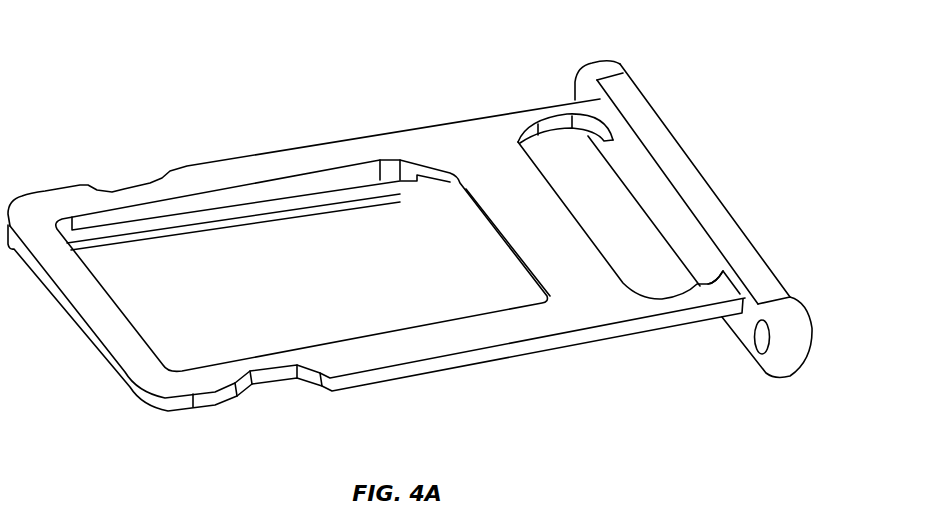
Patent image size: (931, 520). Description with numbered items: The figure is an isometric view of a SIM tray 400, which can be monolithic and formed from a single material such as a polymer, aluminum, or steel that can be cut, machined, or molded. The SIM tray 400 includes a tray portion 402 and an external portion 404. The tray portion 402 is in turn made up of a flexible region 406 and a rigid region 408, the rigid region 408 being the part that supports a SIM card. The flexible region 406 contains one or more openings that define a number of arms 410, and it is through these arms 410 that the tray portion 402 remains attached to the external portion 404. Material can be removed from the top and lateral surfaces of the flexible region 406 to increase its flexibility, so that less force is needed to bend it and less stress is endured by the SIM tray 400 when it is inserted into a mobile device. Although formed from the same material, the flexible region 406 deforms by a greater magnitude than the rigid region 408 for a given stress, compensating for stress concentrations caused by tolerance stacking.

The SIM tray 400 is at (150, 68).
The tray portion 402 is at (377, 377).
The external portion 404 is at (697, 167).
The flexible region 406 is at (697, 313).
The rigid region 408 is at (238, 148).
The arms 410 is at (548, 112).